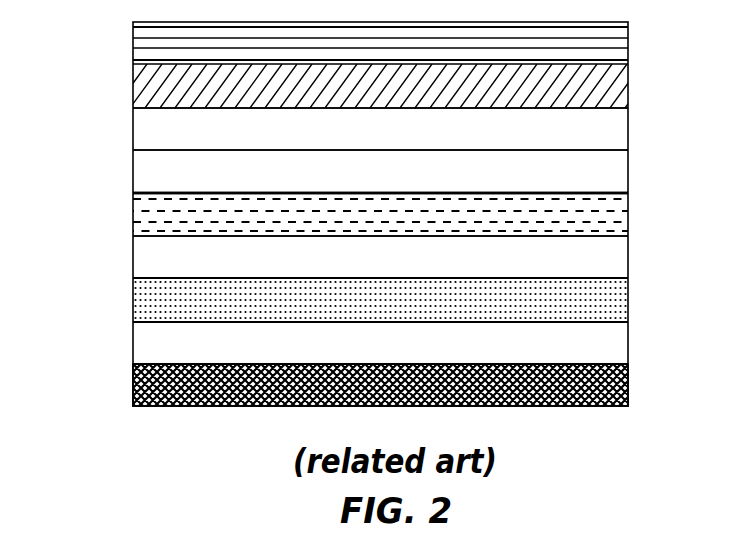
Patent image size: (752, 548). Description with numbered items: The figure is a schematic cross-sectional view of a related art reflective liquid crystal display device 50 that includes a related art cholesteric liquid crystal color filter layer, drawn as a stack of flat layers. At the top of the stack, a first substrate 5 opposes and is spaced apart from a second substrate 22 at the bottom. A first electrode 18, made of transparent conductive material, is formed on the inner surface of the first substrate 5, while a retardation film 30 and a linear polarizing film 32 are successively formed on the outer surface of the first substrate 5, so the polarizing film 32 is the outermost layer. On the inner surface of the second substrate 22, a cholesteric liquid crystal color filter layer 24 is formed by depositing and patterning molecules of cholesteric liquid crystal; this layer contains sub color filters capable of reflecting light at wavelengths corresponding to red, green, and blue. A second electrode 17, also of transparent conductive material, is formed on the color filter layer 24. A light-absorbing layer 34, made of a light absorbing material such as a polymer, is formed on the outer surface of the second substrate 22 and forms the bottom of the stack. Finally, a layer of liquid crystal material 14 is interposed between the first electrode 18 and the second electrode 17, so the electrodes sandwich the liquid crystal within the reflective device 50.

The related art magnetic recording medium stack 50 is at (118, 212).
The linear polarizing film 32 is at (623, 42).
The retardation film 30 is at (623, 85).
The first substrate 5 is at (623, 133).
The first electrode 18 is at (623, 171).
The layer of liquid crystal material 14 is at (623, 212).
The second electrode 17 is at (623, 258).
The cholesteric liquid crystal color filter (CCF) layer 24 is at (623, 302).
The second substrate 22 is at (623, 342).
The light-absorbing layer 34 is at (623, 388).